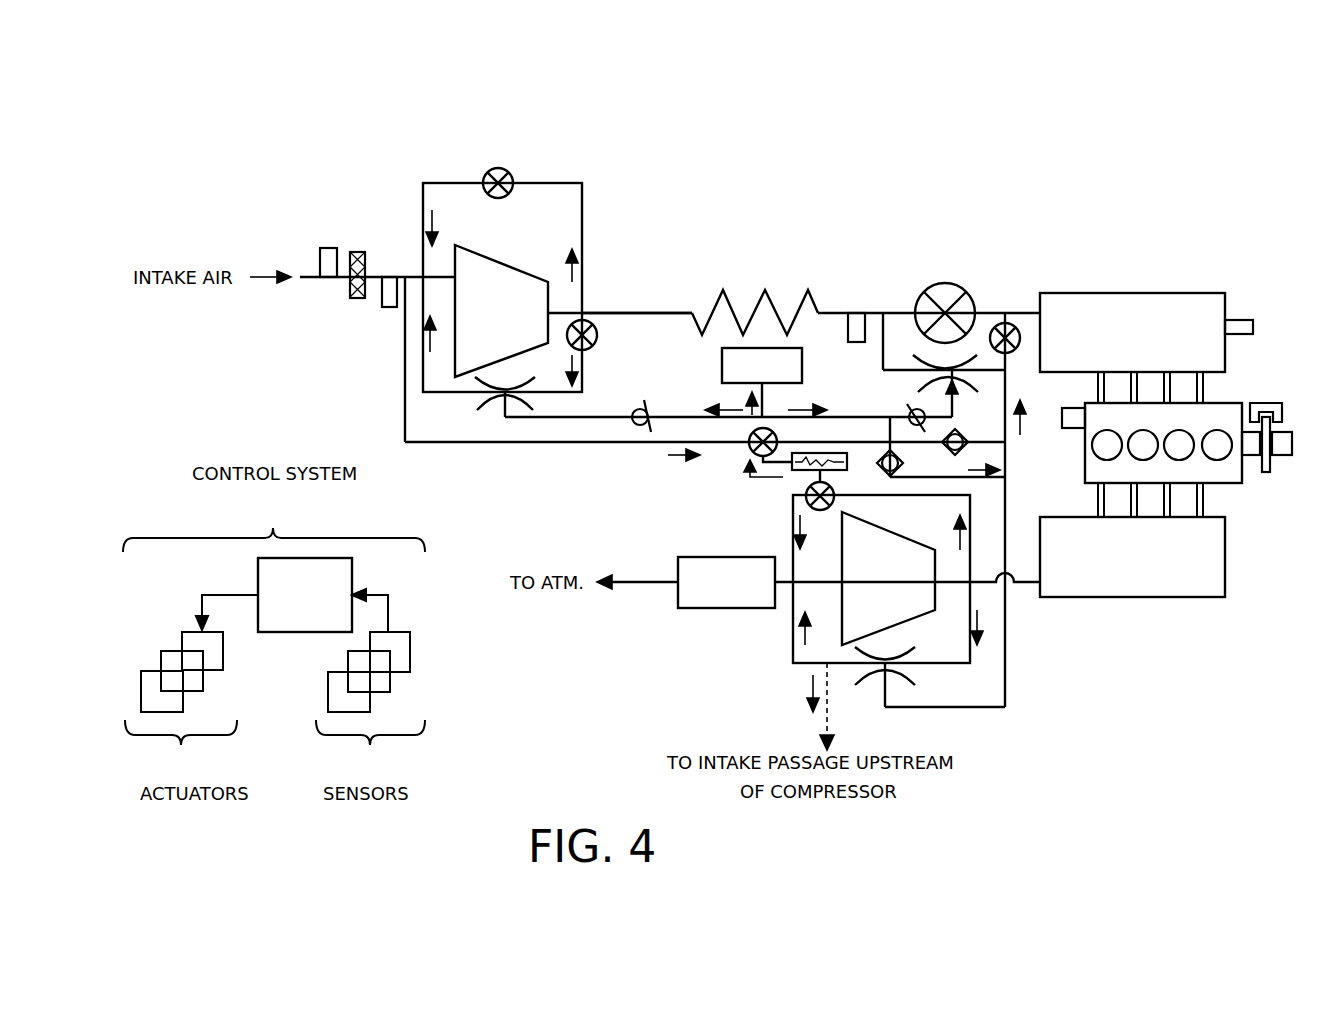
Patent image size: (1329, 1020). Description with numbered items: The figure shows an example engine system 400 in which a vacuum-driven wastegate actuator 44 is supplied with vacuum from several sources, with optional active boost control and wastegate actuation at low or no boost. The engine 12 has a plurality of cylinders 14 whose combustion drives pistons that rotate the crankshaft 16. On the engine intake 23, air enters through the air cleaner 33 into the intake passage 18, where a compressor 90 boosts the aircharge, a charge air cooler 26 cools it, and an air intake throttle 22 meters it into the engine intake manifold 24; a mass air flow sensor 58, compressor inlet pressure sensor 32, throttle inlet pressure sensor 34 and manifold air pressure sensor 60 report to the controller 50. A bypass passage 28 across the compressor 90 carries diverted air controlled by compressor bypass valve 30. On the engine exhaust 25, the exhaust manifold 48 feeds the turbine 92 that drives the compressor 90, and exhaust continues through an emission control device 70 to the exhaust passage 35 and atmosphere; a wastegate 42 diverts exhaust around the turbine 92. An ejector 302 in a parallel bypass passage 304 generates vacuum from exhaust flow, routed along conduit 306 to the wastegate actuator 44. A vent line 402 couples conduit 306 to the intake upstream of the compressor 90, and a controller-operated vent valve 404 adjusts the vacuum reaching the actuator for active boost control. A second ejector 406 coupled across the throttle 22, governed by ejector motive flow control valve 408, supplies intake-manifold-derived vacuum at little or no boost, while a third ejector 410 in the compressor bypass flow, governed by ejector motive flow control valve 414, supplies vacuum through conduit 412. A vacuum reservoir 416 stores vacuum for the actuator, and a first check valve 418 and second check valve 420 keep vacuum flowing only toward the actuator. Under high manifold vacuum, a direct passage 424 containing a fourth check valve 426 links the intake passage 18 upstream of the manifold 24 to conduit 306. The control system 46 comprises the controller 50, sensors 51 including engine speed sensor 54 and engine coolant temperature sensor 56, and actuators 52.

The engine system 400 is at (247, 115).
The engine 12 is at (1218, 492).
The cylinders 14 is at (1100, 456).
The crankshaft 16 is at (1276, 458).
The intake passage 18 is at (628, 300).
The air intake throttle 22 is at (944, 283).
The engine intake 23 is at (810, 228).
The engine intake manifold 24 is at (1132, 332).
The engine exhaust 25 is at (1085, 648).
The charge air cooler 26 is at (757, 300).
The bypass passage 28 is at (440, 183).
The compressor bypass valve 30 is at (492, 168).
The compressor inlet pressure sensor 32 is at (389, 307).
The air cleaner 33 is at (356, 298).
The throttle inlet pressure sensor 34 is at (857, 342).
The exhaust passage 35 is at (650, 584).
The wastegate 42 is at (835, 490).
The wastegate actuator 44 is at (884, 457).
The control system 46 is at (274, 522).
The exhaust manifold 48 is at (1132, 557).
The controller 50 is at (305, 595).
The sensors 51 is at (370, 679).
The actuators 52 is at (191, 681).
The engine speed sensor 54 is at (1260, 403).
The engine coolant temperature sensor 56 is at (1062, 420).
The mass air flow sensor 58 is at (331, 248).
The manifold air pressure sensor 60 is at (1253, 327).
The emission control device 70 is at (726, 582).
The compressor 90 is at (501, 311).
The turbine 92 is at (881, 579).
The ejector 302 is at (912, 652).
The bypass passage 304 is at (793, 650).
The conduit 306 is at (858, 416).
The vent line 402 is at (563, 443).
The vent valve 404 is at (749, 436).
The second ejector 406 is at (978, 385).
The ejector motive flow control valve 408 is at (1005, 322).
The third ejector 410 is at (534, 402).
The conduit 412 is at (590, 412).
The ejector motive flow control valve 414 is at (598, 335).
The vacuum reservoir 416 is at (762, 365).
The first check valve 418 is at (650, 412).
The second check valve 420 is at (900, 466).
The direct passage 424 is at (1005, 442).
The fourth check valve 426 is at (957, 432).